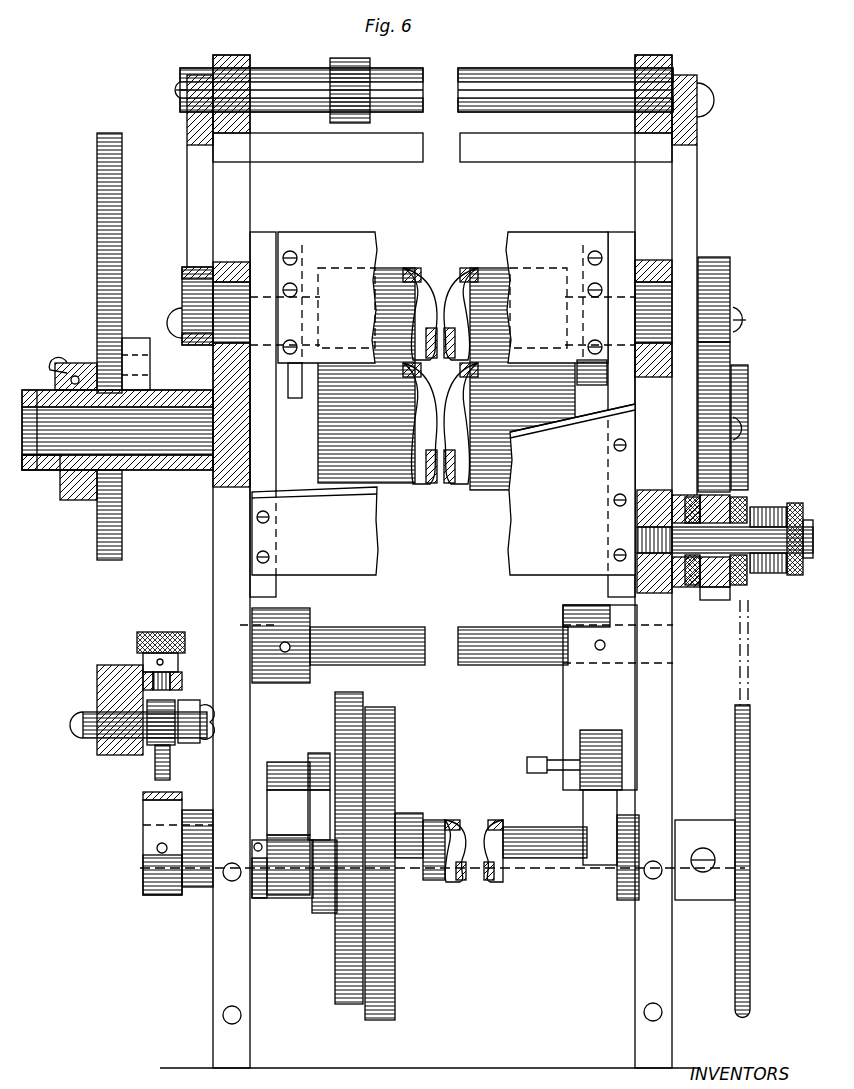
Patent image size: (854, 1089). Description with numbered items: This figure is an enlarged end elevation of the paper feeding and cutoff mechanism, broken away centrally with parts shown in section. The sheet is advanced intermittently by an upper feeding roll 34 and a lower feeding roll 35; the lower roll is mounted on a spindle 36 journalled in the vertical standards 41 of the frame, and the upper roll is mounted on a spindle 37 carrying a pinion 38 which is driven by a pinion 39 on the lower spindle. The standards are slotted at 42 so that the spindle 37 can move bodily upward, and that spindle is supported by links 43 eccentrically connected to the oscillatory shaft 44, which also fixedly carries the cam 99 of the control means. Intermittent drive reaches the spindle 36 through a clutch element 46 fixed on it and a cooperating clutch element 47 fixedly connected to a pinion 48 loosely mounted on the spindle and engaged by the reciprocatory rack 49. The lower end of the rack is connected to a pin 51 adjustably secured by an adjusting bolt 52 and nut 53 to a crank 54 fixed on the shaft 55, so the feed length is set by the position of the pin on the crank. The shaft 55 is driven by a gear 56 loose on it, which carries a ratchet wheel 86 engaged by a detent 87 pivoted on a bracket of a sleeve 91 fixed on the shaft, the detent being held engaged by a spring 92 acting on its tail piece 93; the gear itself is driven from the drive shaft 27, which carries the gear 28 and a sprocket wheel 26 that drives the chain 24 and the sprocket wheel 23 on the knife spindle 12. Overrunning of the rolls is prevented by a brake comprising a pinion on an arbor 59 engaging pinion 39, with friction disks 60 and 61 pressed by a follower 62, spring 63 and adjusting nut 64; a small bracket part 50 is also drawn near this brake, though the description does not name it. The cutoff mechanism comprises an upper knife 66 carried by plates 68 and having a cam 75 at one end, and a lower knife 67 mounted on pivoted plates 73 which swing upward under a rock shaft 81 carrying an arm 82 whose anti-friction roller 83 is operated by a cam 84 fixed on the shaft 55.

The spindle 12 is at (75, 318).
The sprocket wheel 23 is at (748, 396).
The chain 24 is at (750, 690).
The sprocket wheel 26 is at (750, 758).
The drive shaft 27 is at (470, 880).
The gear 28 is at (398, 745).
The feeding roll 34 is at (400, 272).
The feeding roll 35 is at (398, 478).
The spindle 36 is at (232, 460).
The spindle 37 is at (238, 308).
The pinion 38 is at (728, 283).
The pinion 39 is at (735, 374).
The vertical standards 41 is at (216, 528).
The slots 42 is at (212, 288).
The links 43 is at (190, 133).
The oscillatory shaft 44 is at (563, 80).
The clutch element 46 is at (55, 473).
The clutch element 47 is at (60, 365).
The pinion 48 is at (110, 473).
The reciprocatory rack 49 is at (124, 545).
The bracket 50 is at (712, 600).
The pin 51 is at (118, 745).
The adjusting bolt 52 is at (172, 765).
The nut 53 is at (185, 710).
The crank 54 is at (146, 796).
The shaft 55 is at (465, 812).
The gear 56 is at (368, 707).
The arbor 59 is at (715, 545).
The friction disk 60 is at (690, 498).
The friction disk 61 is at (745, 495).
The follower 62 is at (745, 500).
The spring 63 is at (775, 573).
The adjusting nut 64 is at (800, 577).
The upper knife 66 is at (352, 240).
The lower knife 67 is at (512, 495).
The plates 68 is at (290, 383).
The plates 73 is at (262, 237).
The cam 75 is at (583, 372).
The rock shaft 81 is at (510, 660).
The arm 82 is at (572, 705).
The anti-friction roller 83 is at (600, 745).
The cam 84 is at (597, 813).
The ratchet wheel 86 is at (324, 912).
The detent 87 is at (318, 757).
The sleeve 91 is at (286, 898).
The spring 92 is at (310, 814).
The tail piece 93 is at (312, 840).
The cam 99 is at (346, 66).